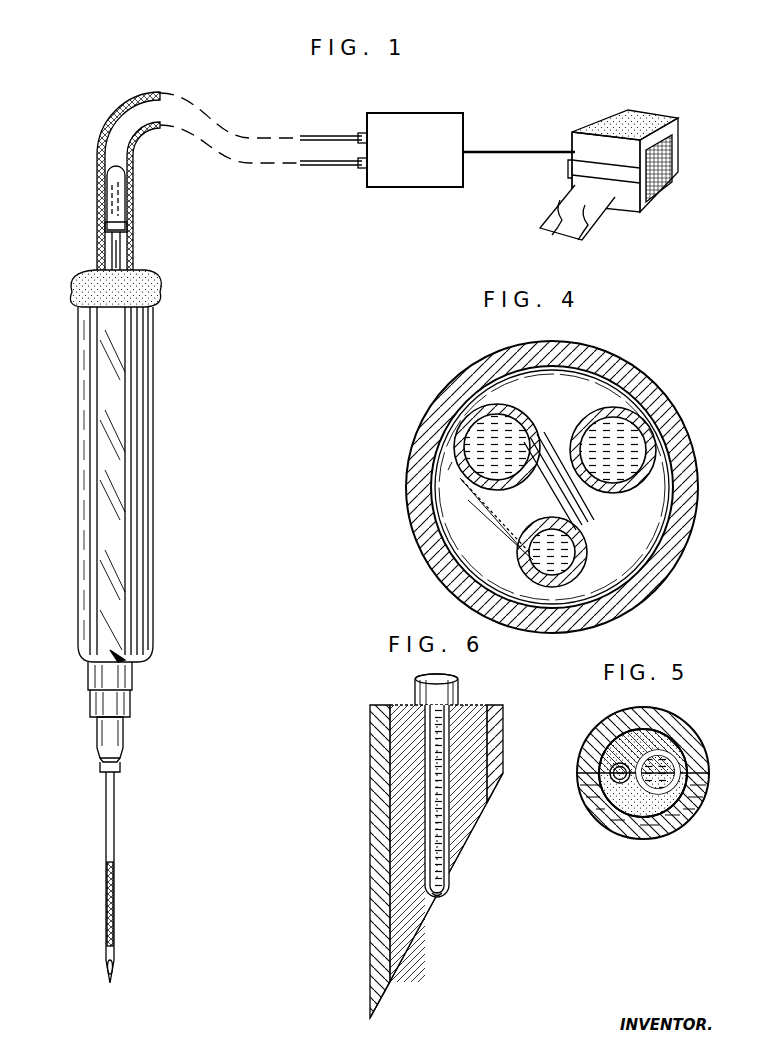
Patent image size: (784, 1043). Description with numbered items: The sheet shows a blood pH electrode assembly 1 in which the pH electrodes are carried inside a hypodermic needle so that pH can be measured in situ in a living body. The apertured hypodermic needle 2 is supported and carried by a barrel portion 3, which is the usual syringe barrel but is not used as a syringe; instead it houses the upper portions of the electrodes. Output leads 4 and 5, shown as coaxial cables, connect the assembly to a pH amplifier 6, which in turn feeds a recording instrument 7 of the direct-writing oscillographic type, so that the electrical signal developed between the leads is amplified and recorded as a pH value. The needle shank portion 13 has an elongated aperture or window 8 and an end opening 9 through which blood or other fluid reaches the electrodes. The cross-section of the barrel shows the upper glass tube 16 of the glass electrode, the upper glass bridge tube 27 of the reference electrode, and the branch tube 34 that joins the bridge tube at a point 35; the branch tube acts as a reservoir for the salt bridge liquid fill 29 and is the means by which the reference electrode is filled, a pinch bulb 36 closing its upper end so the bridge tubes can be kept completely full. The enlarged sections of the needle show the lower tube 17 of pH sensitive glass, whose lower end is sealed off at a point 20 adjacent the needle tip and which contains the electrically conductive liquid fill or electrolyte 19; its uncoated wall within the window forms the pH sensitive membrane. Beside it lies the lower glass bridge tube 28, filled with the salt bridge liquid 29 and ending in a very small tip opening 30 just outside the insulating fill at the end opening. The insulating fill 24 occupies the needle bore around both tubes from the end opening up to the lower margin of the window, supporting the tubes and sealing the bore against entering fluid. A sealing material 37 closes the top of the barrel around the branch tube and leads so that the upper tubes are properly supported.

In FIG. 1, the blood pH electrode assembly 1 is at (157, 79).
In FIG. 1, the apertured hypodermic needle 2 is at (108, 793).
In FIG. 1, the barrel portion 3 is at (110, 432).
In FIG. 4, the barrel portion 3 is at (628, 370).
In FIG. 1, the output lead 4 is at (107, 107).
In FIG. 1, the output lead 5 is at (145, 130).
In FIG. 1, the pH amplifier 6 is at (412, 113).
In FIG. 1, the recording instrument 7 is at (612, 123).
In FIG. 1, the aperture or window 8 is at (108, 888).
In FIG. 5, the aperture or window 8 is at (660, 826).
In FIG. 1, the end opening 9 is at (105, 970).
In FIG. 6, the end opening 9 is at (405, 955).
In FIG. 6, the shank portion 13 is at (372, 840).
In FIG. 5, the shank portion 13 is at (675, 728).
In FIG. 4, the upper glass tube 16 is at (640, 410).
In FIG. 6, the lower tube of pH sensitive glass 17 is at (422, 688).
In FIG. 5, the lower tube of pH sensitive glass 17 is at (690, 805).
In FIG. 4, the electrically conductive liquid fill or electrolyte 19 is at (620, 455).
In FIG. 5, the electrically conductive liquid fill or electrolyte 19 is at (668, 765).
In FIG. 6, the sealed-off point 20 is at (440, 838).
In FIG. 6, the insulating fill 24 is at (392, 757).
In FIG. 5, the insulating fill 24 is at (630, 745).
In FIG. 4, the upper glass bridge tube 27 is at (470, 400).
In FIG. 6, the lower glass bridge tube 28 is at (460, 855).
In FIG. 5, the lower glass bridge tube 28 is at (612, 765).
In FIG. 4, the salt bridge liquid fill 29 is at (480, 445).
In FIG. 6, the salt bridge liquid fill 29 is at (438, 873).
In FIG. 5, the salt bridge liquid fill 29 is at (612, 788).
In FIG. 6, the tip opening 30 is at (437, 903).
In FIG. 4, the branch tube 34 is at (520, 560).
In FIG. 4, the junction point 35 is at (468, 488).
In FIG. 1, the pinch bulb 36 is at (114, 191).
In FIG. 1, the stopper / plug 37 is at (95, 286).